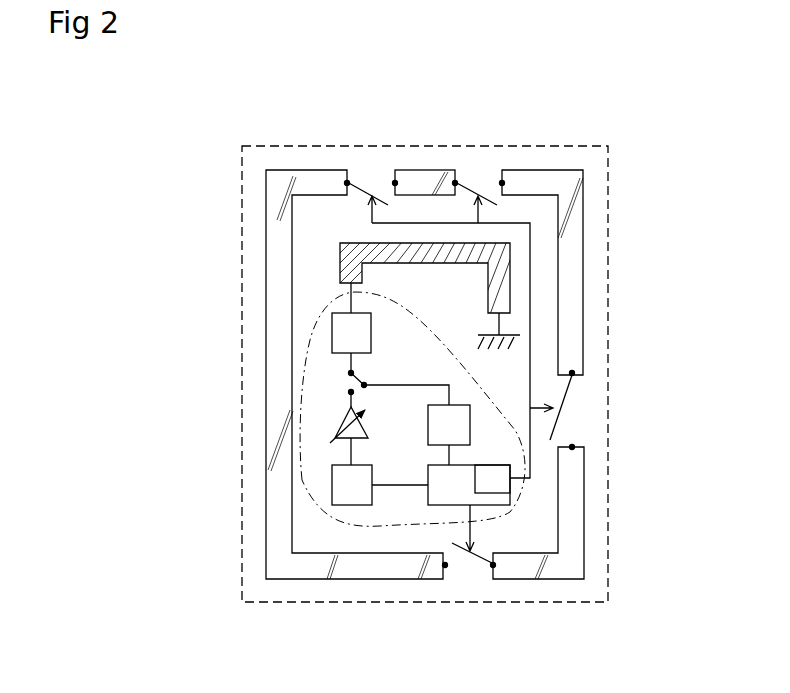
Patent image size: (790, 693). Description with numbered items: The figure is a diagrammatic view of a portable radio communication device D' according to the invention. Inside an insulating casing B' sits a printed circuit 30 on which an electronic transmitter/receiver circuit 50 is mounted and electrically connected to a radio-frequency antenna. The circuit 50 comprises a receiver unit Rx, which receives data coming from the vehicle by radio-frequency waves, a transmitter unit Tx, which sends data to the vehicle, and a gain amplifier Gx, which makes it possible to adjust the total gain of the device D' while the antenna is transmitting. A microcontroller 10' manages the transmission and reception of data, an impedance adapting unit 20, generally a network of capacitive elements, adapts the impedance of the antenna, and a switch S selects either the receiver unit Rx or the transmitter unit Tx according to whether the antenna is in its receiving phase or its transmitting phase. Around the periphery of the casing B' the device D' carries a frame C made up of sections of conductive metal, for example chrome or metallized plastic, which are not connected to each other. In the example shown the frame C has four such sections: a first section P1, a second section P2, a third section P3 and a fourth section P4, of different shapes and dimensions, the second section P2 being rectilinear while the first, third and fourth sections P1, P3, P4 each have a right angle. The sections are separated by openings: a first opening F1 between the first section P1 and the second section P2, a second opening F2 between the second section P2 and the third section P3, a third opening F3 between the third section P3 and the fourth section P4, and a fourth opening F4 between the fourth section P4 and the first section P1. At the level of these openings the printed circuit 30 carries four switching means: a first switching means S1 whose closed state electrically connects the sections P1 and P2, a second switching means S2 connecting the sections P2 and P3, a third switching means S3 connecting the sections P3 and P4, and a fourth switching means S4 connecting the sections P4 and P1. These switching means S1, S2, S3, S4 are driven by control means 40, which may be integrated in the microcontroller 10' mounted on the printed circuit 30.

The first section P1 is at (270, 177).
The second section P2 is at (420, 172).
The third section P3 is at (580, 230).
The fourth section P4 is at (575, 528).
The first opening F1 is at (358, 170).
The second opening F2 is at (491, 170).
The third opening F3 is at (578, 437).
The fourth opening F4 is at (455, 580).
The first switching means S1 is at (366, 186).
The second switching means S2 is at (479, 184).
The third switching means S3 is at (579, 403).
The fourth switching means S4 is at (478, 563).
The switch S is at (350, 382).
The frame C is at (438, 178).
The insulating casing B' is at (582, 119).
The portable radio communication device D' is at (458, 338).
The impedance adapting unit 20 is at (340, 325).
The printed circuit 30 is at (530, 543).
The control means 40 is at (469, 485).
The electronic transmitter/receiver circuit 50 is at (303, 483).
The microcontroller 10' is at (489, 409).
The gain amplifier Gx is at (364, 436).
The transmitter unit Tx is at (380, 485).
The receiver unit Rx is at (449, 435).